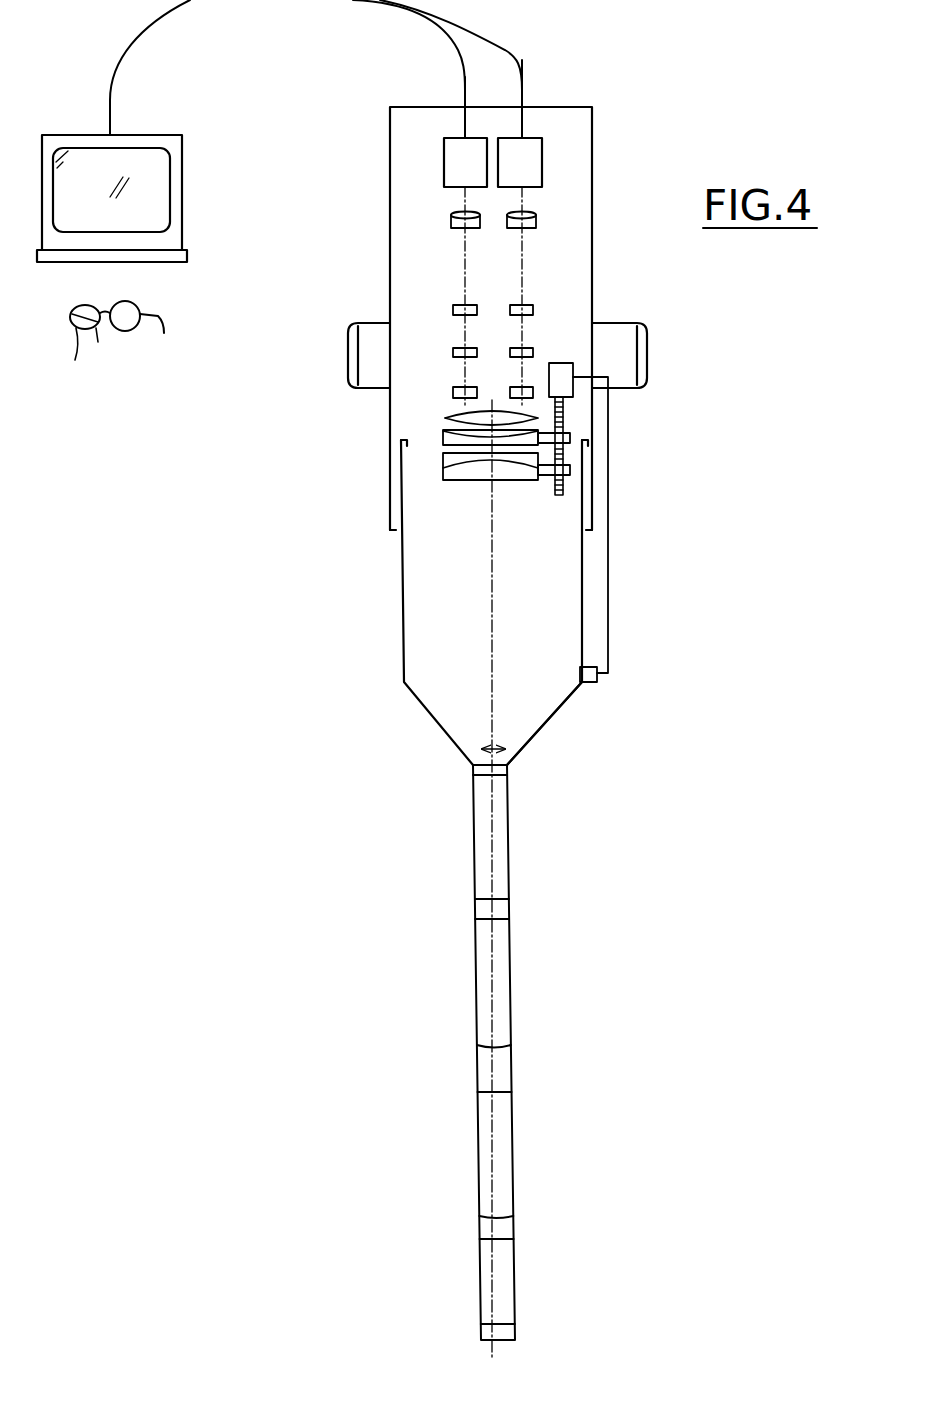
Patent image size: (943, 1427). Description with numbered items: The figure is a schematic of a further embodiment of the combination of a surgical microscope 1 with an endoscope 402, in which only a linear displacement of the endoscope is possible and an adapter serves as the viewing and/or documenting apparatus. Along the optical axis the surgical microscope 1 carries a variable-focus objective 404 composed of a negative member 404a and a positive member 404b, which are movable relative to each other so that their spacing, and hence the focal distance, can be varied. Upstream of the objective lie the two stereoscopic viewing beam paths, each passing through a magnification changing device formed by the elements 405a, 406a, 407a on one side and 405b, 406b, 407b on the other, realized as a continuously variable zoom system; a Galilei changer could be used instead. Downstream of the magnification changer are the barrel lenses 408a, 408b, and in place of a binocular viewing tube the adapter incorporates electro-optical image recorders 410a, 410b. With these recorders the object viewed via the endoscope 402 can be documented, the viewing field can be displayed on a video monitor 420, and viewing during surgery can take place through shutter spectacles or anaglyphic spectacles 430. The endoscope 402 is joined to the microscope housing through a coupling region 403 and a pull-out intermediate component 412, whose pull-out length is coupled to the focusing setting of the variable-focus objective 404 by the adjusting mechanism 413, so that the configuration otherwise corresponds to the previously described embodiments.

The surgical microscope 1 is at (343, 577).
The endoscope 402 is at (453, 1062).
The neck / movable coupling portion 403 is at (497, 742).
The variable-focus objective 404 is at (363, 467).
The negative member 404a is at (443, 465).
The positive member 404b is at (443, 435).
The magnification changing device element 405a is at (533, 310).
The magnification changing device element 405b is at (453, 308).
The magnification changing device element 406a is at (533, 352).
The magnification changing device element 406b is at (453, 352).
The magnification changing device element 407a is at (533, 388).
The magnification changing device element 407b is at (453, 395).
The barrel lens 408a is at (533, 223).
The barrel lens 408b is at (452, 228).
The electro-optical image recorder 410a is at (527, 163).
The electro-optical image recorder 410b is at (462, 130).
The pull-out intermediate component 412 is at (532, 712).
The focus adjusting mechanism 413 is at (608, 485).
The video monitor 420 is at (182, 177).
The shutter spectacles or anaglyphic spectacles 430 is at (111, 350).